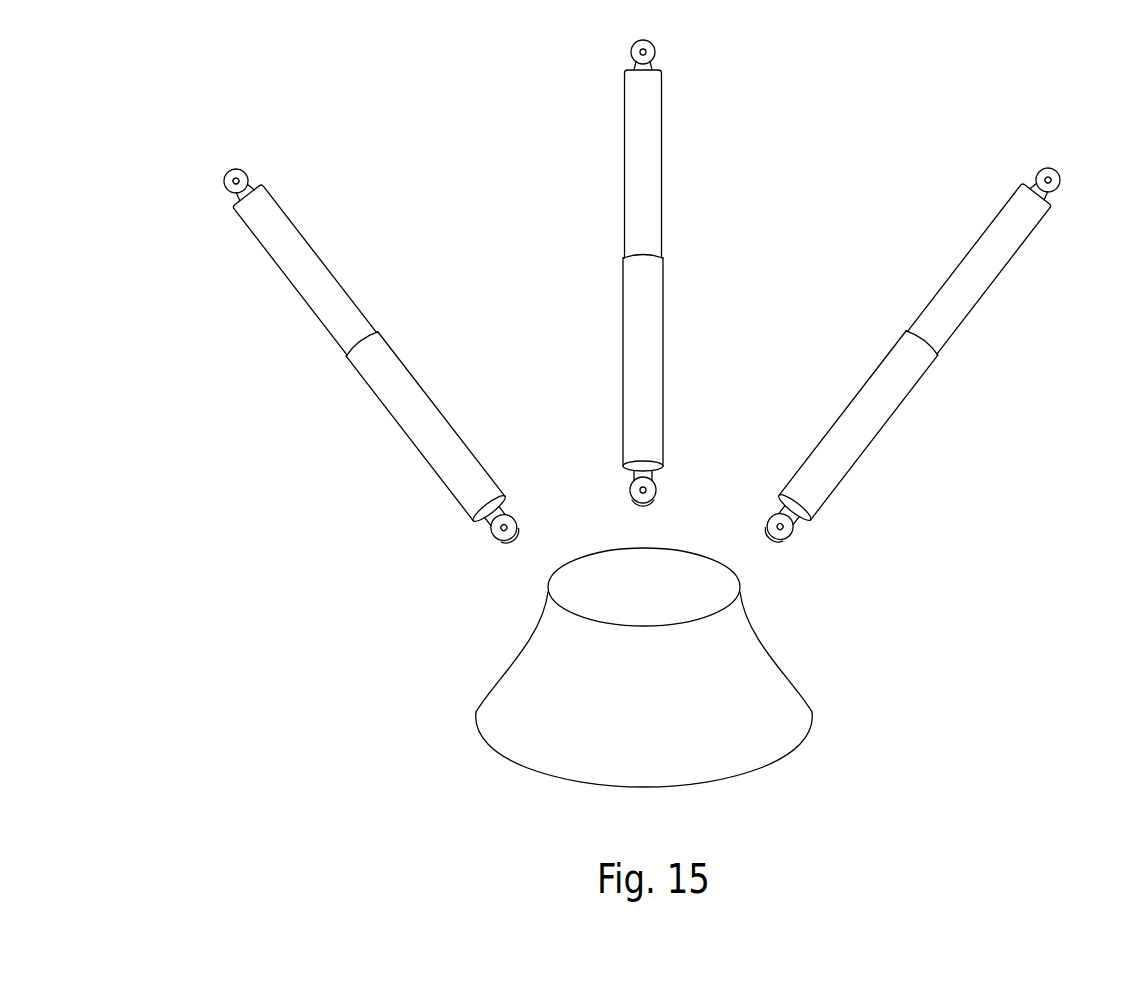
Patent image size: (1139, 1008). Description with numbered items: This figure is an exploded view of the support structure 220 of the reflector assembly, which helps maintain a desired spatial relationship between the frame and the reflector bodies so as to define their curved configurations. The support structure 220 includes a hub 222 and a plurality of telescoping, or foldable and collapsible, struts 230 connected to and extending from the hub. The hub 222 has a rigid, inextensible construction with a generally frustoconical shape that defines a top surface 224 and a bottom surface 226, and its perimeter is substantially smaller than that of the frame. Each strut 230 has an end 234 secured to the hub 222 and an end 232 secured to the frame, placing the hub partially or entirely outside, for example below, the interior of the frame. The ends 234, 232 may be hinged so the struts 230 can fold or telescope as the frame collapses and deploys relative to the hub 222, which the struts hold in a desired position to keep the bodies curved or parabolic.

The support structure 220 is at (1003, 498).
The hub 222 is at (668, 712).
The top surface 224 is at (605, 560).
The bottom surface 226 is at (717, 783).
The strut 230 is at (330, 371).
The end 232 is at (631, 52).
The end 234 is at (495, 535).